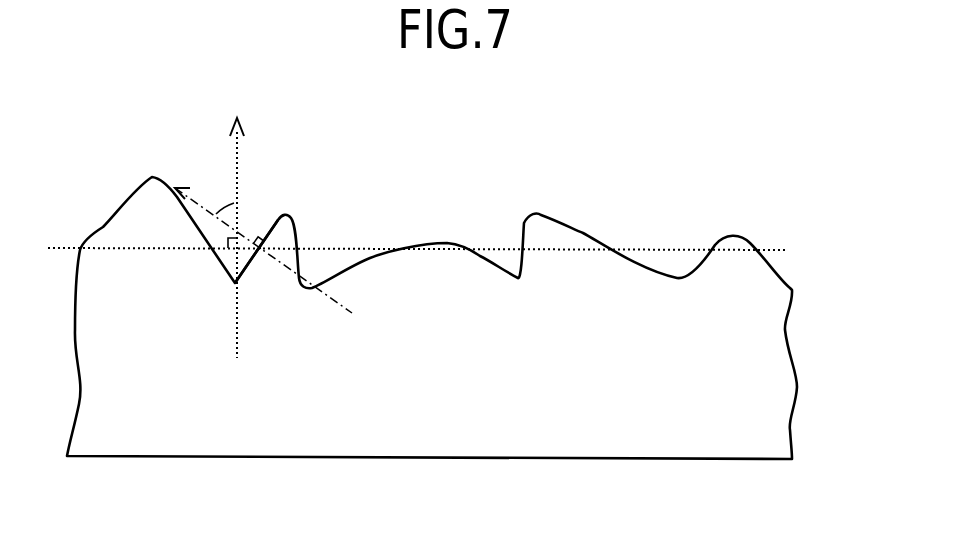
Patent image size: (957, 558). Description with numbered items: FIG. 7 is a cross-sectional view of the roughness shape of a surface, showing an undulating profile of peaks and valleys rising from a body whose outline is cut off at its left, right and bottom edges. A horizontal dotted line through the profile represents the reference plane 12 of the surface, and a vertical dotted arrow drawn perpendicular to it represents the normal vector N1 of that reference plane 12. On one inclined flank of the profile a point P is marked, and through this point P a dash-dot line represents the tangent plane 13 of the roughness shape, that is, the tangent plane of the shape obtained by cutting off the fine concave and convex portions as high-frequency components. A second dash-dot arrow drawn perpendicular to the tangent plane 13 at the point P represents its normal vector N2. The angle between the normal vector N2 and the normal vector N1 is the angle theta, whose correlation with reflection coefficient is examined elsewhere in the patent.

The reference plane 12 is at (439, 318).
The tangent plane 13 is at (208, 322).
The normal vector of the reference plane N1 is at (243, 214).
The normal vector of the tangent plane N2 is at (250, 220).
The point on inclined facet P is at (258, 255).